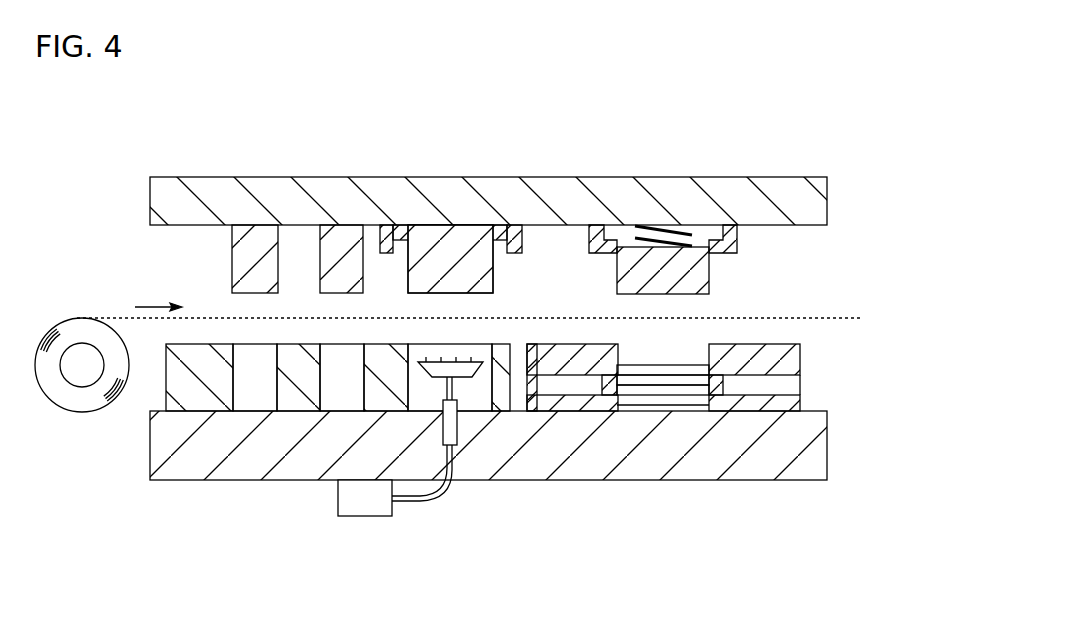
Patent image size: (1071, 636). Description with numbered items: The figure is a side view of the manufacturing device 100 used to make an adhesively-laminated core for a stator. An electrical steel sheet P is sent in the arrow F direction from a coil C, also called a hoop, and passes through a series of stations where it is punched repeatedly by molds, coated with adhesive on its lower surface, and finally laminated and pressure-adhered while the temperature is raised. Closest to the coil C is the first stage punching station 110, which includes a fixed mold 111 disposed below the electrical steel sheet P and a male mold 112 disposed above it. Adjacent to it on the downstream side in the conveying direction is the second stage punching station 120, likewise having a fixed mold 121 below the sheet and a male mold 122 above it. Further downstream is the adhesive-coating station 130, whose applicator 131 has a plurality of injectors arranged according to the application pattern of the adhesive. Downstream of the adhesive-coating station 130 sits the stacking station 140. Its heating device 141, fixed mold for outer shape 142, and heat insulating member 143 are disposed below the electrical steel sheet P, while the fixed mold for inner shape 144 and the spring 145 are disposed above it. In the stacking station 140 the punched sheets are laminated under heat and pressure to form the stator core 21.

The manufacturing device 100 is at (883, 217).
The first stage punching station 110 is at (215, 205).
The male mold 112 is at (231, 253).
The second stage punching station 120 is at (412, 217).
The male mold 122 is at (364, 253).
The stacking station 140 is at (696, 203).
The fixed mold for inner shape 144 is at (709, 268).
The spring 145 is at (679, 226).
The fixed mold 111 is at (240, 368).
The fixed mold 121 is at (325, 377).
The adhesive-coating station 130 is at (421, 479).
The applicator 131 is at (478, 376).
The heating device 141 is at (724, 383).
The fixed mold for outer shape 142 is at (800, 360).
The heat insulating member 143 is at (562, 408).
The stator core 21 is at (657, 392).
The coil C is at (52, 400).
The electrical steel sheet P is at (115, 317).
The arrow direction F is at (136, 300).